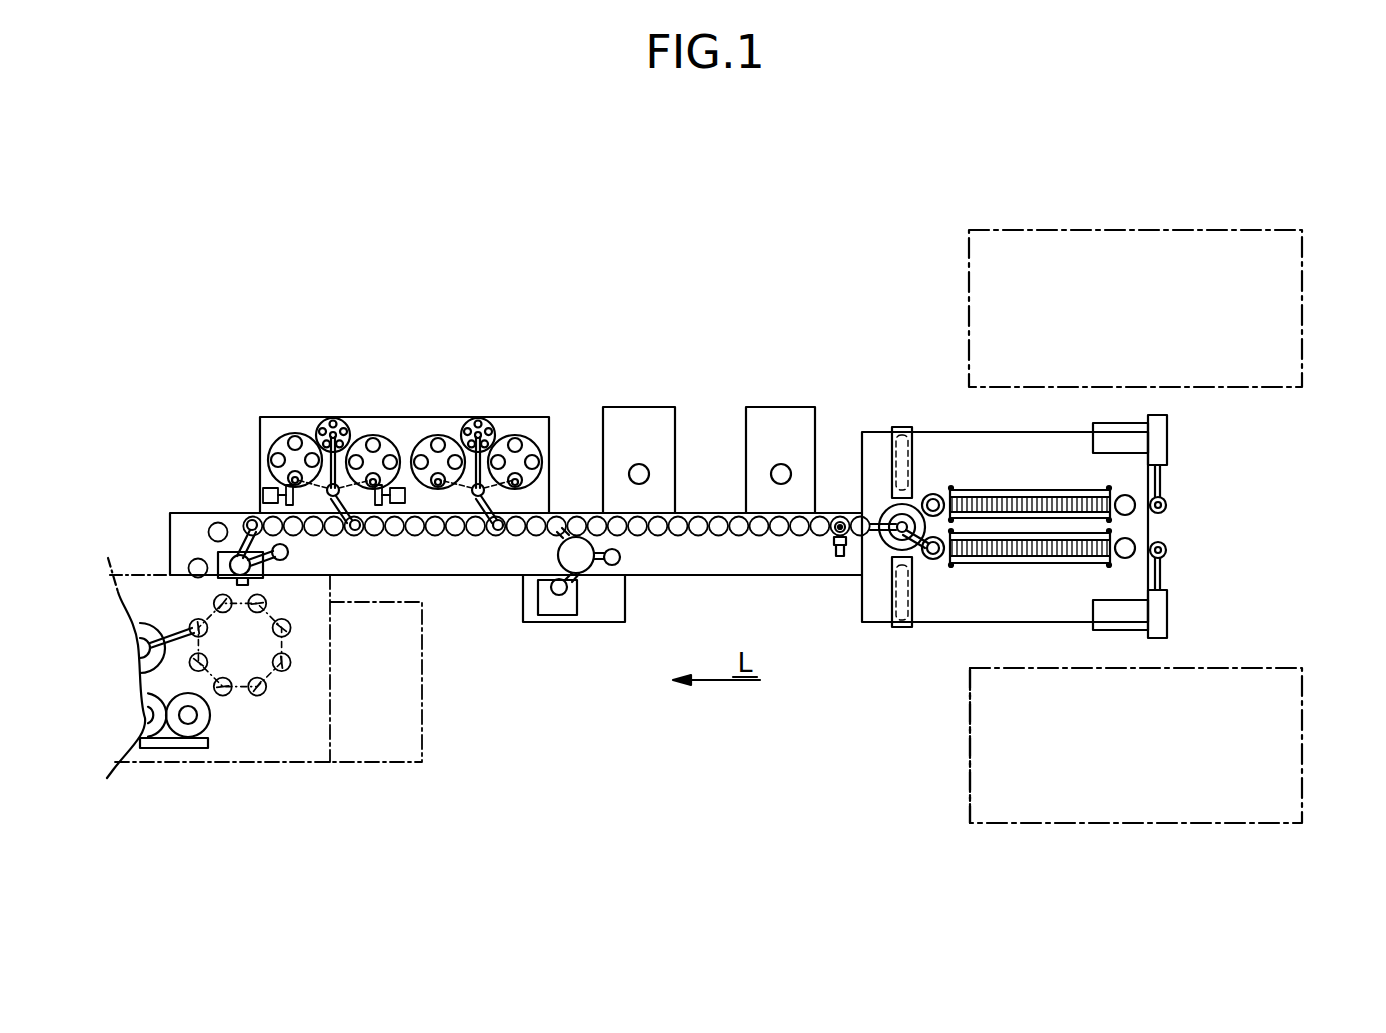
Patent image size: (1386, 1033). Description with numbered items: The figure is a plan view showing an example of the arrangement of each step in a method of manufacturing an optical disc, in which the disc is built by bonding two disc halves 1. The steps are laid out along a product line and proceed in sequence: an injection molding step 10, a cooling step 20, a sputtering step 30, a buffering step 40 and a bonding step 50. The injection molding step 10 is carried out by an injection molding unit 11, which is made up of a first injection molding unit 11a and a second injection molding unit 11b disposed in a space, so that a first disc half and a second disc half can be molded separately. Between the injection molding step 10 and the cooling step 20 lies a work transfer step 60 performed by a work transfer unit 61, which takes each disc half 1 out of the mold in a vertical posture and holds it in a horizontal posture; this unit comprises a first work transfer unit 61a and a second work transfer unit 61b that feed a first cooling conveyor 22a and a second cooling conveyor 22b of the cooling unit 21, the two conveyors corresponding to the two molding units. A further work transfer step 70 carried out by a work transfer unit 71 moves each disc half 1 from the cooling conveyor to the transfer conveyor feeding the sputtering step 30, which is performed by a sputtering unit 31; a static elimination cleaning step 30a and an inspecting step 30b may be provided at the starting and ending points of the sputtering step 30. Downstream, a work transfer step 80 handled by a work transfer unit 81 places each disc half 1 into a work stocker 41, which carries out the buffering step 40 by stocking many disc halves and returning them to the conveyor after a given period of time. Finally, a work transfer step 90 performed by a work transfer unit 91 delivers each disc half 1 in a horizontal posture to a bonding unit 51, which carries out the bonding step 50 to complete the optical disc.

The disc half 1 is at (285, 560).
The injection molding step 10 is at (1092, 783).
The injection molding unit 11 is at (1092, 783).
The first injection molding unit 11a is at (970, 792).
The second injection molding unit 11b is at (1100, 228).
The cooling step 20 is at (1005, 595).
The cooling unit 21 is at (1005, 595).
The first cooling conveyor 22a is at (1037, 567).
The second cooling conveyor 22b is at (1031, 490).
The sputtering step 30 is at (709, 405).
The static elimination cleaning step 30a is at (838, 515).
The inspecting step 30b is at (553, 618).
The sputtering unit 31 is at (650, 407).
The buffering step 40 is at (404, 494).
The work stocker 41 is at (278, 437).
The bonding step 50 is at (251, 716).
The bonding unit 51 is at (214, 748).
The work transfer step 60 is at (1233, 526).
The work transfer unit 61 is at (1233, 526).
The first work transfer unit 61a is at (1174, 588).
The second work transfer unit 61b is at (1170, 455).
The work transfer step 70 is at (916, 561).
The work transfer unit 71 is at (917, 497).
The work transfer step 80 is at (498, 535).
The work transfer unit 81 is at (348, 420).
The work transfer step 90 is at (210, 501).
The work transfer unit 91 is at (238, 550).